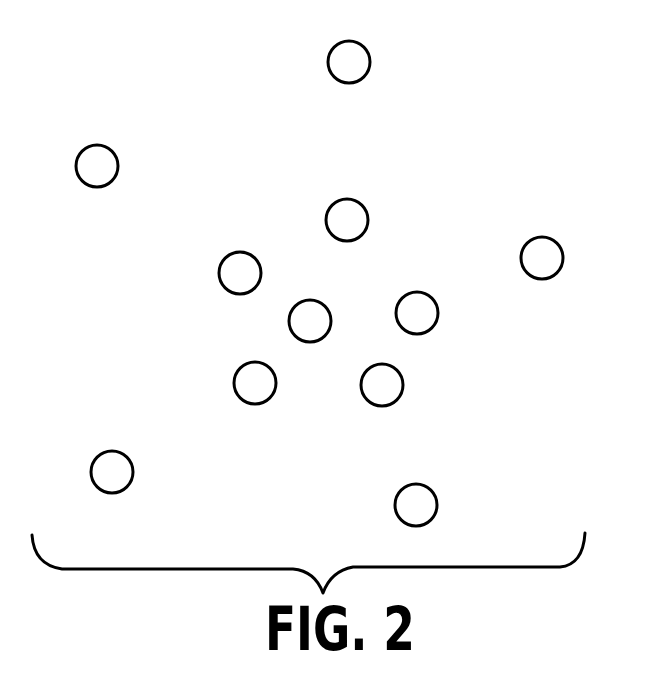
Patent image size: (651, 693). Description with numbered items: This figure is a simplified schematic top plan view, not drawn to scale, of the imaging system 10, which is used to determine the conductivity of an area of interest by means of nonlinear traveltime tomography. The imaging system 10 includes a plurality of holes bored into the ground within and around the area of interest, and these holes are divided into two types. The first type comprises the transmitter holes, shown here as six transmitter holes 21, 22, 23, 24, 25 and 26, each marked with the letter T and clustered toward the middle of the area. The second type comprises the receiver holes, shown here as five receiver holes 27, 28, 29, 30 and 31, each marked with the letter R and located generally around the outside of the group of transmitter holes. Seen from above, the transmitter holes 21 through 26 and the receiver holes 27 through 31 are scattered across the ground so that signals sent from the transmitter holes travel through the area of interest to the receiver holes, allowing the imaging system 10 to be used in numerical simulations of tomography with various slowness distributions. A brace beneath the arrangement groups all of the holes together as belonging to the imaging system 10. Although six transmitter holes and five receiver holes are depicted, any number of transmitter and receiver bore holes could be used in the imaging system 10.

The imaging system 10 is at (243, 64).
The transmitter hole 21 is at (218, 276).
The transmitter hole 22 is at (248, 404).
The transmitter hole 23 is at (403, 382).
The transmitter hole 24 is at (430, 296).
The transmitter hole 25 is at (327, 307).
The transmitter hole 26 is at (364, 207).
The receiver hole 27 is at (118, 158).
The receiver hole 28 is at (123, 454).
The receiver hole 29 is at (435, 493).
The receiver hole 30 is at (552, 239).
The receiver hole 31 is at (370, 58).